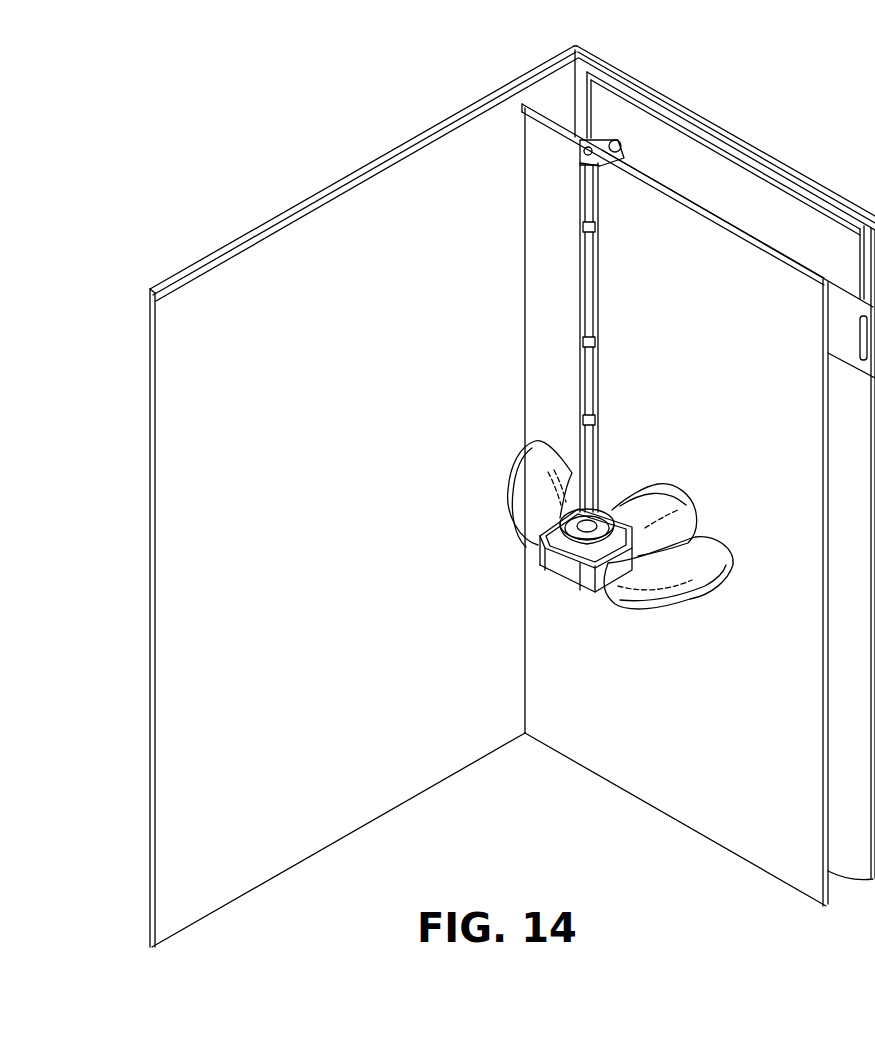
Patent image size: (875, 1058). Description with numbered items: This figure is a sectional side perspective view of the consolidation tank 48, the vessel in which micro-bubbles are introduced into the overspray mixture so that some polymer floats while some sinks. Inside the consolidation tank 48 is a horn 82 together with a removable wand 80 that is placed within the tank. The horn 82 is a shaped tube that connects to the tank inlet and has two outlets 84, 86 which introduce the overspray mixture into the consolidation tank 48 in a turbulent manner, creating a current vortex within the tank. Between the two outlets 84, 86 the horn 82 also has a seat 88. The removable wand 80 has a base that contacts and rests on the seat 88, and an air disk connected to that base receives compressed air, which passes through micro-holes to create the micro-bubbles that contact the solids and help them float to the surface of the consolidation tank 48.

The consolidation tank 48 is at (298, 170).
The removable wand 80 is at (598, 408).
The horn 82 is at (575, 592).
The outlet 84 is at (525, 508).
The outlet 86 is at (695, 586).
The seat 88 is at (557, 563).